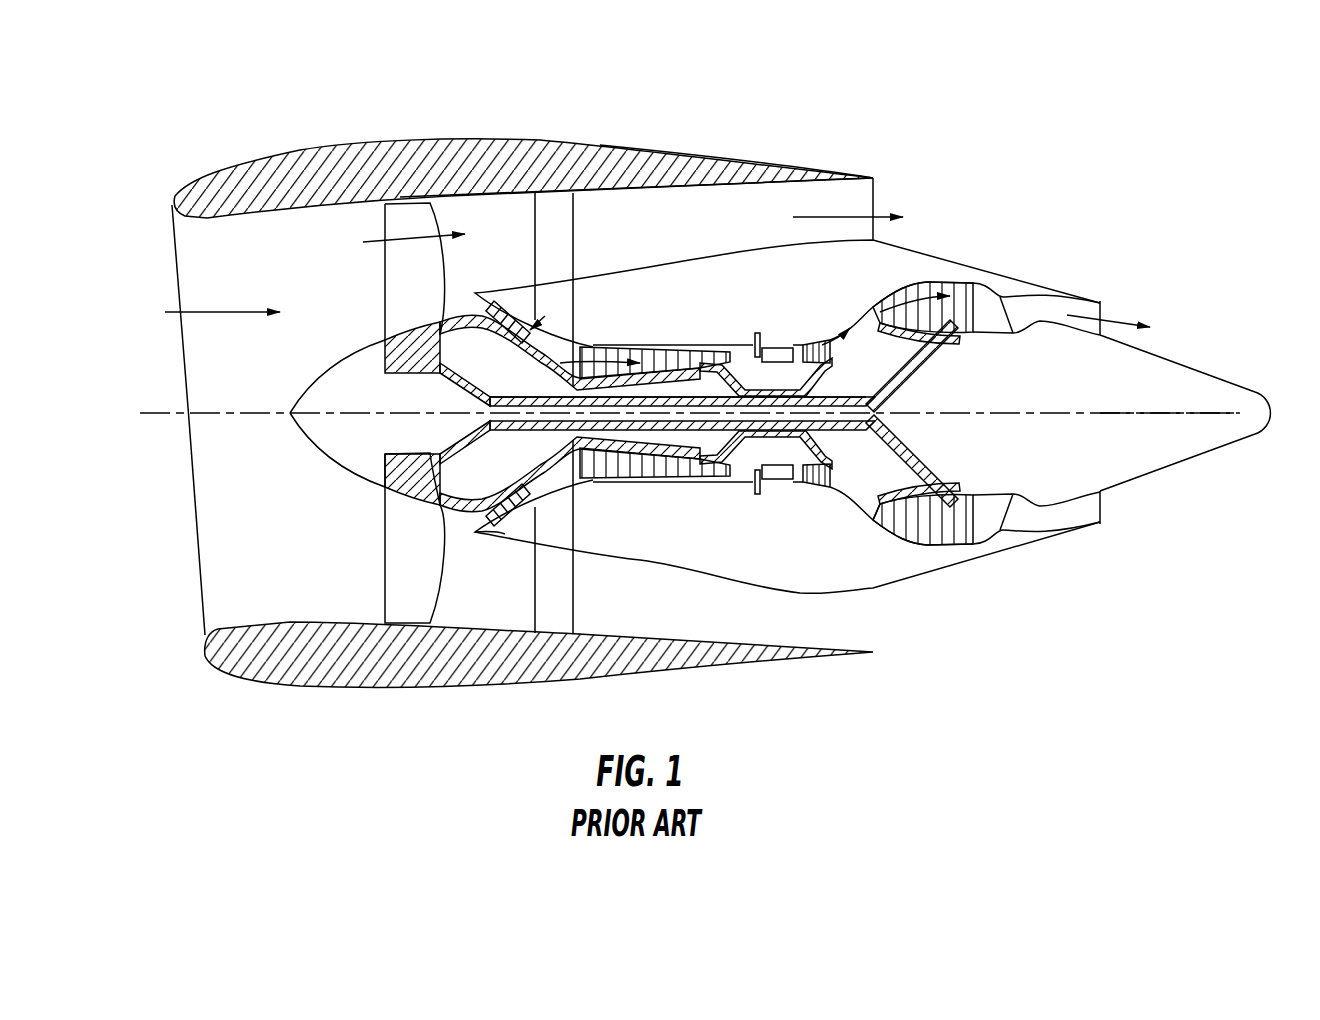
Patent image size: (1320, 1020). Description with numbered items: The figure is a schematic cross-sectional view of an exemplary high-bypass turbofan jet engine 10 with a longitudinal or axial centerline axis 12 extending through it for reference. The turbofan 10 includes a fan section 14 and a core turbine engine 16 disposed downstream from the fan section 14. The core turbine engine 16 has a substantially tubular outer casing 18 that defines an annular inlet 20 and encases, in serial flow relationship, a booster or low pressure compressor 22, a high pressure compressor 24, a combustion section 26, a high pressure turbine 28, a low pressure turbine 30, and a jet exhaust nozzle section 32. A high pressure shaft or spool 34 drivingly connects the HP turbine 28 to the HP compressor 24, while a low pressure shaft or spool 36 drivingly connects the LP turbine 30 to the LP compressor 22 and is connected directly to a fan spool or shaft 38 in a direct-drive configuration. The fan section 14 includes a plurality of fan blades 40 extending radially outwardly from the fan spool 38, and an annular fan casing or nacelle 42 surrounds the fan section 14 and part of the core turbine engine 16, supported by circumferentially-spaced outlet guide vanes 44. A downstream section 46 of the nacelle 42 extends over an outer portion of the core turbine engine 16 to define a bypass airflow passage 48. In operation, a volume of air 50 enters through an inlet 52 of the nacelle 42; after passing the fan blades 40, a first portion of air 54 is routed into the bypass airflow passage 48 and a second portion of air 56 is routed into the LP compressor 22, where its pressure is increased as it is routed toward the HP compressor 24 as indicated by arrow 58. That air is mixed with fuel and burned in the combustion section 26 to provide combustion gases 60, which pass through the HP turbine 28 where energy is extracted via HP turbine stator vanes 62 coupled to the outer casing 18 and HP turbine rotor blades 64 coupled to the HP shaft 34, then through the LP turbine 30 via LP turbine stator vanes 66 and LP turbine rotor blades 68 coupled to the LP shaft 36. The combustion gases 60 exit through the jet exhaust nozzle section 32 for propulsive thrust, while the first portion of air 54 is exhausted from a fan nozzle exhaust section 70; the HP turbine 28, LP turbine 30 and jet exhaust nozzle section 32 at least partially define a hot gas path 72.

The high-bypass turbofan jet engine 10 is at (1020, 152).
The longitudinal or axial centerline axis 12 is at (1043, 412).
The fan section 14 is at (425, 105).
The core turbine engine 16 is at (744, 305).
The outer casing 18 is at (730, 580).
The annular inlet 20 is at (488, 518).
The low pressure compressor 22 is at (538, 498).
The high pressure compressor 24 is at (603, 477).
The combustion section 26 is at (773, 482).
The high pressure turbine 28 is at (850, 487).
The low pressure turbine 30 is at (958, 540).
The jet exhaust nozzle section 32 is at (1020, 524).
The high pressure shaft or spool 34 is at (816, 373).
The low pressure shaft or spool 36 is at (512, 393).
The fan spool or shaft 38 is at (420, 398).
The fan blades 40 is at (382, 563).
The nacelle 42 is at (428, 690).
The outlet guide vanes 44 is at (573, 222).
The downstream section of the nacelle 46 is at (805, 170).
The bypass airflow passage 48 is at (671, 240).
The volume of air 50 is at (223, 312).
The inlet 52 is at (203, 632).
The first portion of air 54 is at (400, 233).
The second portion of air 56 is at (460, 307).
The second portion of air routed toward HP compressor 58 is at (605, 358).
The combustion gases 60 is at (920, 283).
The HP turbine stator vanes 62 is at (790, 480).
The HP turbine rotor blades 64 is at (820, 462).
The LP turbine stator vanes 66 is at (880, 525).
The LP turbine rotor blades 68 is at (893, 530).
The fan nozzle exhaust section 70 is at (866, 202).
The hot gas path 72 is at (863, 320).